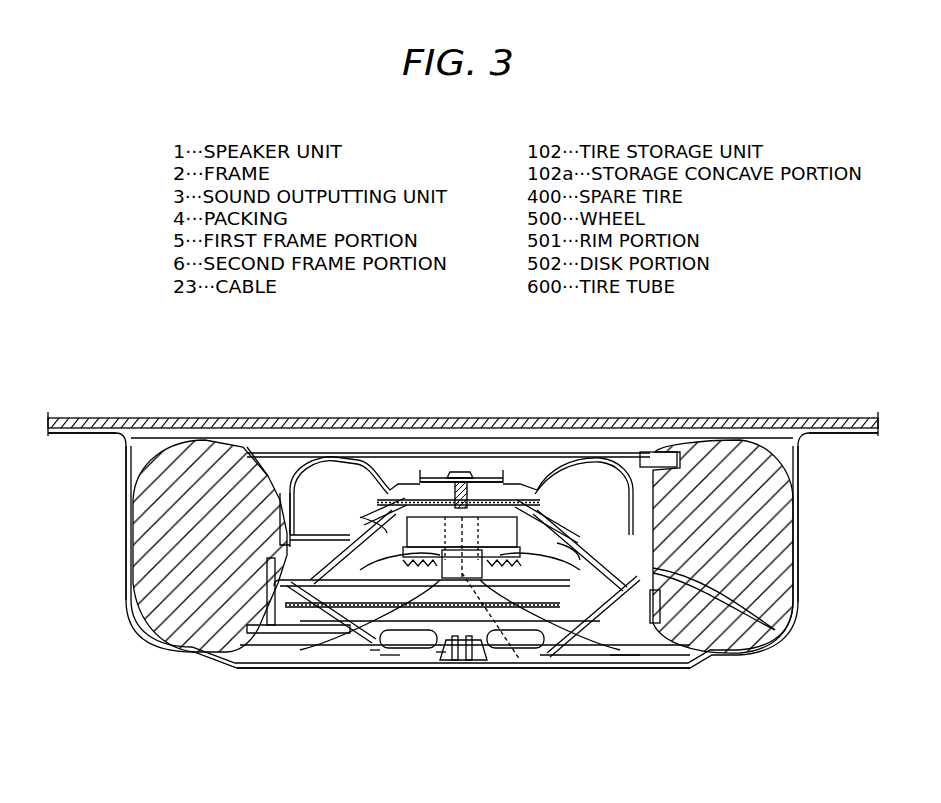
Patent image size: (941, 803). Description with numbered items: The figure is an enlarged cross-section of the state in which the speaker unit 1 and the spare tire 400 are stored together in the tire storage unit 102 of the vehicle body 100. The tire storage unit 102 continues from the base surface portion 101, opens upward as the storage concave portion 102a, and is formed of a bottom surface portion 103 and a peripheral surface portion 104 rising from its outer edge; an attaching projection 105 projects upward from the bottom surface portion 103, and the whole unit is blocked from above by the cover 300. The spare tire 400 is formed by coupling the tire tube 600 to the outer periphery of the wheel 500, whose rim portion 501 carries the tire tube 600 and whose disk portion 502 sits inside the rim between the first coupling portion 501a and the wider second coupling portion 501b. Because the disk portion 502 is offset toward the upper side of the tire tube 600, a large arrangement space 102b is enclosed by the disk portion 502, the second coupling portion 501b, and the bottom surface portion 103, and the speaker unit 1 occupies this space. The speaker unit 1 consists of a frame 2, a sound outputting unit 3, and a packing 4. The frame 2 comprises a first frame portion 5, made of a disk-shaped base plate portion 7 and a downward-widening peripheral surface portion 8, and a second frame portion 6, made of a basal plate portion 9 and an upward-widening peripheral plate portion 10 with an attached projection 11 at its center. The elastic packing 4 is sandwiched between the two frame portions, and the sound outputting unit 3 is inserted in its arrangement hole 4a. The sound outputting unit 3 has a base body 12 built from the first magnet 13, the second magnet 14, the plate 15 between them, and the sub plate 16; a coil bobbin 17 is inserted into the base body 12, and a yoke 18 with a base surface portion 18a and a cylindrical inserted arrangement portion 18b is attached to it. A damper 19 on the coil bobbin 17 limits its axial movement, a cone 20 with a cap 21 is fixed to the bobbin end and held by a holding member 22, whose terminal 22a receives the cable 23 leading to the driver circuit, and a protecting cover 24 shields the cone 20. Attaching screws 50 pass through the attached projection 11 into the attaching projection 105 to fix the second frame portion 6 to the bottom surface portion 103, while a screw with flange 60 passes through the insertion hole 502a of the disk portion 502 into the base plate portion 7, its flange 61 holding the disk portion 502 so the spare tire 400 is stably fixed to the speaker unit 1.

The speaker unit 1 is at (300, 660).
The frame 2 is at (434, 648).
The sound outputting unit 3 is at (550, 665).
The packing 4 is at (690, 660).
The arrangement hole 4a is at (560, 655).
The first frame portion 5 is at (290, 590).
The second frame portion 6 is at (318, 586).
The base plate portion 7 is at (400, 423).
The peripheral surface portion 8 is at (623, 423).
The basal plate portion 9 is at (415, 615).
The peripheral plate portion 10 is at (335, 630).
The attached projection 11 is at (422, 640).
The base body 12 is at (577, 423).
The first magnet 13 is at (493, 423).
The second magnet 14 is at (560, 423).
The plate 15 is at (423, 420).
The sub plate 16 is at (380, 423).
The coil bobbin 17 is at (600, 663).
The yoke 18 is at (530, 423).
The base surface portion 18a is at (413, 423).
The inserted arrangement portion 18b is at (520, 660).
The damper 19 is at (315, 423).
The cone 20 is at (393, 655).
The cap 21 is at (436, 652).
The holding member 22 is at (380, 655).
The terminal 22a is at (620, 660).
The cable 23 is at (655, 670).
The protecting cover 24 is at (408, 625).
The attaching screw 50 is at (455, 648).
The screw with flange 60 is at (510, 423).
The flange 61 is at (548, 423).
The vehicle body 100 is at (828, 436).
The base surface portion 101 is at (857, 436).
The tire storage unit 102 is at (800, 547).
The storage concave portion 102a is at (795, 450).
The arrangement space 102b is at (327, 553).
The bottom surface portion 103 is at (583, 670).
The peripheral surface portion 104 is at (127, 520).
The attaching projection 105 is at (473, 663).
The cover 300 is at (154, 420).
The spare tire 400 is at (185, 447).
The wheel 500 is at (342, 423).
The rim portion 501 is at (615, 448).
The first coupling portion 501a is at (660, 470).
The second coupling portion 501b is at (700, 610).
The disk portion 502 is at (367, 423).
The insertion hole 502a is at (473, 423).
The tire tube 600 is at (757, 458).